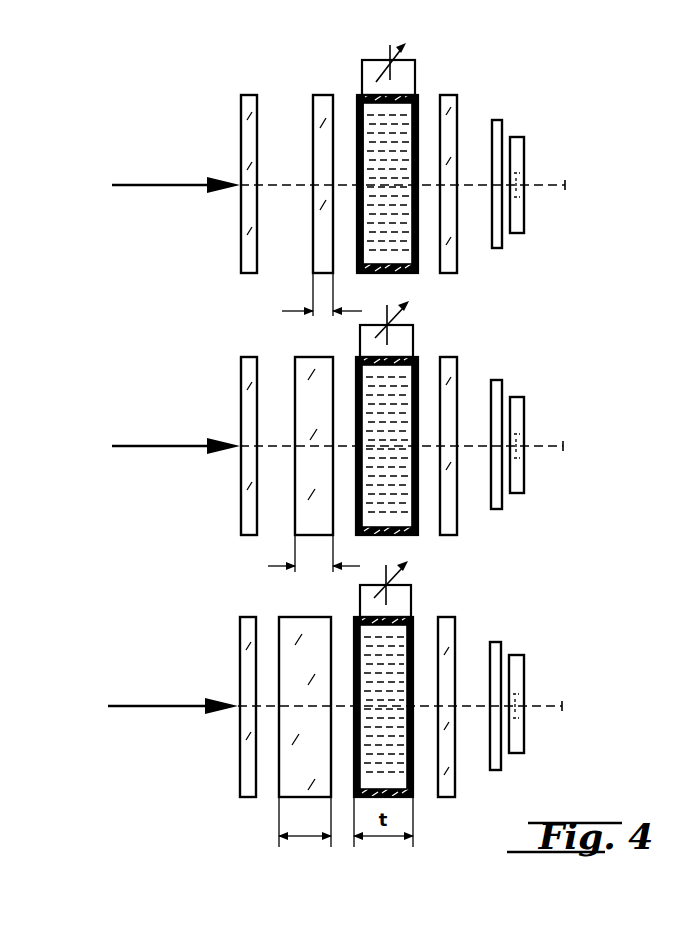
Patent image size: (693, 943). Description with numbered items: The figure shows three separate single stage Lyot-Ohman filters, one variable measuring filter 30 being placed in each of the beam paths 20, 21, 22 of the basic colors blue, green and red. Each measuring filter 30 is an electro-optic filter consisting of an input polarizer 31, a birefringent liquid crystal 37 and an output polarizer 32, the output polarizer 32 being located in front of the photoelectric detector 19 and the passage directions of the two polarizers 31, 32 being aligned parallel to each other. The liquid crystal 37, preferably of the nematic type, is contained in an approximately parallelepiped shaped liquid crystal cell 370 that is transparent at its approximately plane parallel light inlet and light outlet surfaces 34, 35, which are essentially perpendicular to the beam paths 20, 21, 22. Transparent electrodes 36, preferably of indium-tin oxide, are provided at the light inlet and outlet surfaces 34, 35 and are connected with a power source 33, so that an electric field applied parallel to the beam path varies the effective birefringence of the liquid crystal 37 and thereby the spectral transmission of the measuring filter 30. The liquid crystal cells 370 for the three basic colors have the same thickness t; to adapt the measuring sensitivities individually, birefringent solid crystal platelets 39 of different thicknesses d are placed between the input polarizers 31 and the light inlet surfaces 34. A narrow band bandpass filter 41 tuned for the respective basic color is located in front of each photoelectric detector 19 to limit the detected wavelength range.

The photoelectric detector 19 is at (524, 219).
The beam path 20 is at (148, 183).
The beam path 21 is at (147, 444).
The beam path 22 is at (154, 704).
The measuring filter 30 is at (556, 96).
The input polarizer 31 is at (241, 257).
The output polarizer 32 is at (452, 135).
The power source 33 is at (386, 62).
The light inlet surface 34 is at (358, 103).
The light outlet surface 35 is at (416, 103).
The transparent electrode 36 is at (358, 240).
The liquid crystal 37 is at (395, 230).
The birefringent solid crystal platelet 39 is at (313, 98).
The bandpass filter 41 is at (498, 118).
The liquid crystal cell 370 is at (403, 272).